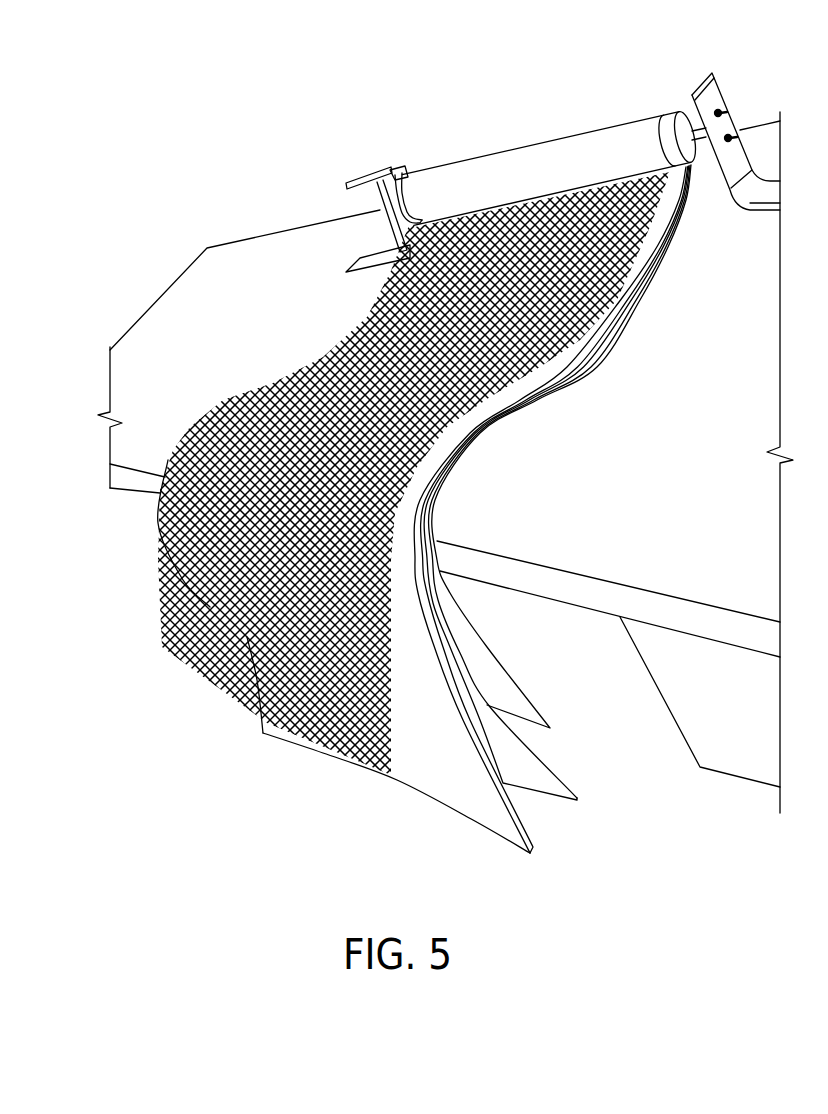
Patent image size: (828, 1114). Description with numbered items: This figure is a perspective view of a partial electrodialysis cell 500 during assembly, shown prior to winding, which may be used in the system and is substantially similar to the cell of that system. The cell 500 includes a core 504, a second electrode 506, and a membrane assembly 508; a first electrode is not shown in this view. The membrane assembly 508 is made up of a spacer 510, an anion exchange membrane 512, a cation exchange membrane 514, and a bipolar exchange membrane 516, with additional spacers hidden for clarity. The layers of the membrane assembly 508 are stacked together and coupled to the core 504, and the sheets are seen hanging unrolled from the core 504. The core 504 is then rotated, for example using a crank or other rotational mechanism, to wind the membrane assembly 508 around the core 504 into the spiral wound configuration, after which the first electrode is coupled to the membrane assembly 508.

The electrodialysis cell 500 is at (168, 68).
The core 504 is at (663, 135).
The second electrode 506 is at (540, 163).
The membrane assembly 508 is at (497, 541).
The spacer 510 is at (163, 628).
The anion exchange membrane 512 is at (490, 807).
The cation exchange membrane 514 is at (570, 810).
The bipolar exchange membrane 516 is at (542, 708).